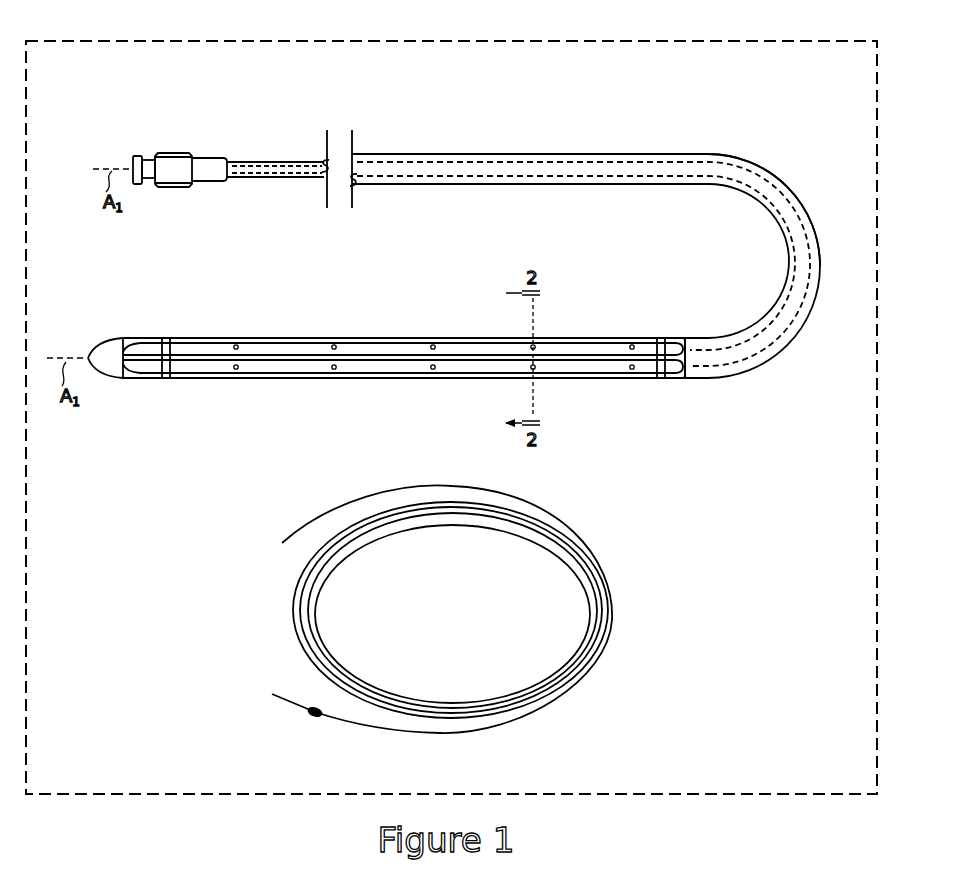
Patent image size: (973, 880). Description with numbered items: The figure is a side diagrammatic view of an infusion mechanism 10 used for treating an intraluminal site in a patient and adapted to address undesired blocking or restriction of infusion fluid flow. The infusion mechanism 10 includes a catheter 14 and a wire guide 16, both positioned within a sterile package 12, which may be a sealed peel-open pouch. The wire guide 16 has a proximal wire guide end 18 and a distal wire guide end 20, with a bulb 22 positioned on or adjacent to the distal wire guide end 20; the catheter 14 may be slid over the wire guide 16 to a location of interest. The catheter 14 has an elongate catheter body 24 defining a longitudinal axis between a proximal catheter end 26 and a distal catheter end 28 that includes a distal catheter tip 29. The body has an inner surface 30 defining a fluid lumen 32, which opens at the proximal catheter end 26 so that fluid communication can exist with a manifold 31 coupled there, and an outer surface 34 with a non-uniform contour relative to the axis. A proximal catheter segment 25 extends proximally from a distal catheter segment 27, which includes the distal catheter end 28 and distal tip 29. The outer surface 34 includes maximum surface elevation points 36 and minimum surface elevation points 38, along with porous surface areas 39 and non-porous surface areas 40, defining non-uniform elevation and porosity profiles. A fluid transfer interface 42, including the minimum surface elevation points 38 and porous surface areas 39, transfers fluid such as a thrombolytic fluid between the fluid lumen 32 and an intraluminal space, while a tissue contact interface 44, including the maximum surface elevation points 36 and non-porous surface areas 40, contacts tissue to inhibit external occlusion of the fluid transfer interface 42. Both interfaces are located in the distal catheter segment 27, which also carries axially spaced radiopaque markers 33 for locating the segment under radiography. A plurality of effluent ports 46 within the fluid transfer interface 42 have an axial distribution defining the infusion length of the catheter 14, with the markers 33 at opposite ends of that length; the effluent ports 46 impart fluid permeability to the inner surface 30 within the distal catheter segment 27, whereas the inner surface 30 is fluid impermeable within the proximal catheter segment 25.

The infusion mechanism 10 is at (900, 125).
The sterile package 12 is at (878, 243).
The catheter 14 is at (680, 148).
The wire guide 16 is at (616, 622).
The proximal wire guide end 18 is at (290, 550).
The distal wire guide end 20 is at (279, 685).
The bulb 22 is at (311, 723).
The elongate catheter body 24 is at (396, 153).
The proximal catheter segment 25 is at (792, 190).
The proximal catheter end 26 is at (234, 156).
The distal catheter segment 27 is at (386, 379).
The distal catheter end 28 is at (91, 374).
The distal catheter tip 29 is at (99, 350).
The inner surface 30 is at (796, 330).
The manifold 31 is at (173, 188).
The fluid lumen 32 is at (242, 172).
The radiopaque markers 33 is at (165, 337).
The outer surface 34 is at (690, 382).
The maximum surface elevation points 36 is at (238, 337).
The minimum surface elevation points 38 is at (289, 337).
The porous surface areas 39 is at (343, 347).
The non-porous surface areas 40 is at (410, 334).
The fluid transfer interface 42 is at (585, 346).
The tissue contact interface 44 is at (602, 362).
The effluent ports 46 is at (334, 345).